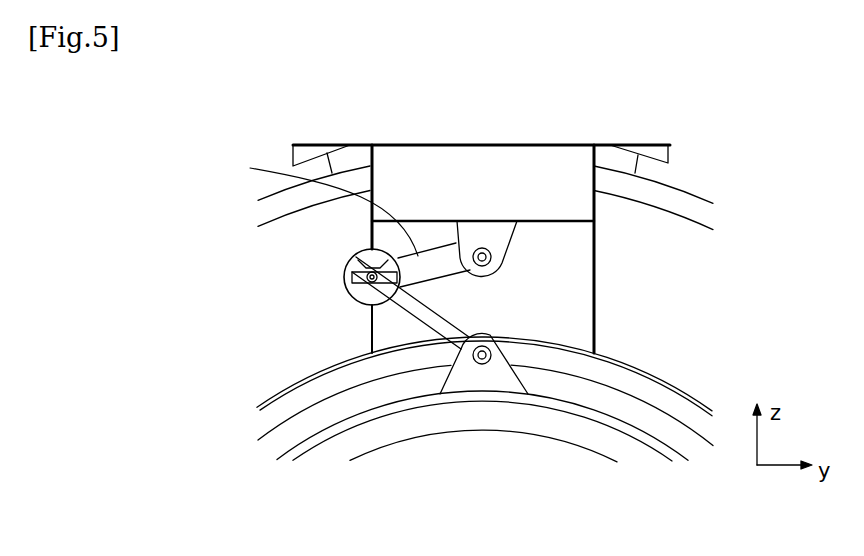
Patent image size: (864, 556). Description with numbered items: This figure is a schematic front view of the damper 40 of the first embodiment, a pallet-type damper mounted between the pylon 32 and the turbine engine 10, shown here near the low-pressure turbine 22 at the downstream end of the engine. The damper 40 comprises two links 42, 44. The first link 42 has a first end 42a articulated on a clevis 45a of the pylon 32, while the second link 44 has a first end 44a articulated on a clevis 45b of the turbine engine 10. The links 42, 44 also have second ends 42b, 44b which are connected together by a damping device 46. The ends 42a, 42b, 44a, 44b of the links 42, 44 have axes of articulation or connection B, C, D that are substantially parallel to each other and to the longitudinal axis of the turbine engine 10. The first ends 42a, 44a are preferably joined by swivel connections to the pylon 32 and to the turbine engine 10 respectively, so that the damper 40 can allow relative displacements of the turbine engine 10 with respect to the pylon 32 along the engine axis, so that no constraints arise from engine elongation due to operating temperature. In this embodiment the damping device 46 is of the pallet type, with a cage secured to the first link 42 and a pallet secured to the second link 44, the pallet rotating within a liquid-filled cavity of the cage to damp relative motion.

The turbine engine 10 is at (706, 182).
The low-pressure turbine 22 is at (320, 460).
The pylon 32 is at (547, 160).
The damper 40 is at (290, 305).
The first link 42 is at (346, 223).
The first end of first link 42a is at (482, 243).
The second end of first link 42b is at (343, 267).
The second link 44 is at (388, 294).
The first end of second link 44a is at (485, 366).
The second end of second link 44b is at (357, 299).
The clevis of the pylon 45a is at (492, 230).
The clevis of the turbine engine 45b is at (508, 378).
The damping device 46 is at (338, 282).
The axis of articulation B is at (493, 258).
The axis of articulation C is at (488, 338).
The axis of articulation D is at (347, 250).